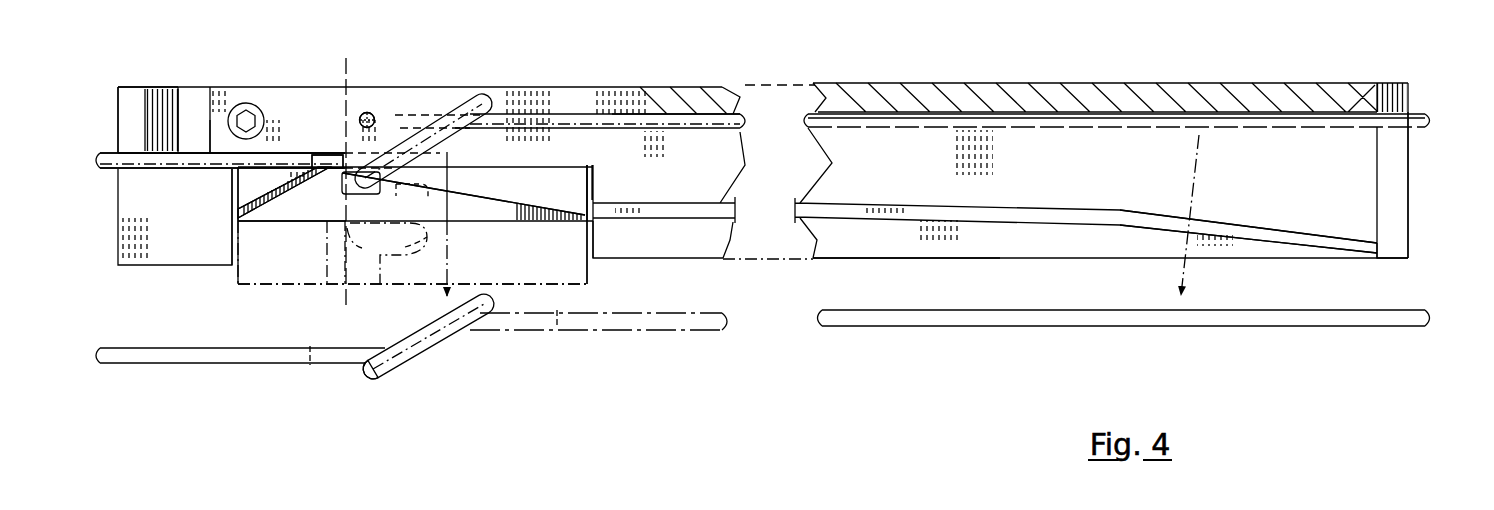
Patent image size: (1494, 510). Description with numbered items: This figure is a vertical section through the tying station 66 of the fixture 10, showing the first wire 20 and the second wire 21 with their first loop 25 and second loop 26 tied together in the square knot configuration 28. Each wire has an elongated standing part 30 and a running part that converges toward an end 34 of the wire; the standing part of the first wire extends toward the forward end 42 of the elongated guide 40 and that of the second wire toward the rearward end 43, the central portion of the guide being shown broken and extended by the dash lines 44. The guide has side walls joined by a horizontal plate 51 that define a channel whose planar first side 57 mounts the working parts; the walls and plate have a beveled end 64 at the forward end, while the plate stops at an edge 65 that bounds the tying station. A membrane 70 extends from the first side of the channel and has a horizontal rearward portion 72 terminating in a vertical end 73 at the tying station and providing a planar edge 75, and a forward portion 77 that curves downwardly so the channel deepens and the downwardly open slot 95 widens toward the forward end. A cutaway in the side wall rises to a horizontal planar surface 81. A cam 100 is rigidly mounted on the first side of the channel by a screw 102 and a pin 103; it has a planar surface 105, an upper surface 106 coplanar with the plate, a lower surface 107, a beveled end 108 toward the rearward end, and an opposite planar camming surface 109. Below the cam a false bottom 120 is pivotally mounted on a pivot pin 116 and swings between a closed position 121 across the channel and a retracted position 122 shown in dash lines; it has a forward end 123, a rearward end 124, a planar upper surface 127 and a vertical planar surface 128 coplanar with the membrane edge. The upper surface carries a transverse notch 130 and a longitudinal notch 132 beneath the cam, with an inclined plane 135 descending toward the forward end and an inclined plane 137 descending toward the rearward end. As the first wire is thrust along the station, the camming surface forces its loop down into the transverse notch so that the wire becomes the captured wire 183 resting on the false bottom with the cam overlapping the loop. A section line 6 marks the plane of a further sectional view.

The section line 6- 6 is at (340, 58).
The fixture 10 is at (1412, 188).
The first wire 20 is at (577, 330).
The second wire 21 is at (148, 169).
The first loop 25 is at (366, 382).
The second loop 26 is at (444, 340).
The square knot configuration 28 is at (413, 137).
The standing part 30 is at (707, 117).
The end of the wire 34 is at (548, 127).
The guide 40 is at (1411, 88).
The forward end 42 is at (1408, 236).
The rearward end 43 is at (120, 110).
The dash lines 44 is at (768, 86).
The horizontal plate 51 is at (1307, 83).
The first side of the channel 57 is at (886, 167).
The beveled end 64 is at (1396, 156).
The edge of the top plate 65 is at (640, 95).
The tying station 66 is at (476, 84).
The membrane 70 is at (1063, 226).
The rearward portion of the membrane 72 is at (673, 220).
The end of the membrane 73 is at (591, 218).
The edge of the membrane 75 is at (1040, 208).
The forward portion of the membrane 77 is at (1250, 224).
The horizontal planar surface 81 is at (515, 171).
The slot 95 is at (925, 258).
The cam 100 is at (222, 84).
The screw 102 is at (248, 103).
The pin 103 is at (371, 113).
The planar surface of the cam 105 is at (300, 111).
The upper surface of the cam 106 is at (365, 111).
The lower surface of the cam 107 is at (222, 152).
The beveled end of the cam 108 is at (190, 92).
The camming surface 109 is at (444, 99).
The pivot pin 116 is at (235, 182).
The false bottom 120 is at (303, 225).
The closed position 121 is at (272, 226).
The retracted position 122 is at (292, 285).
The forward end of the false bottom 123 is at (586, 219).
The rearward end of the false bottom 124 is at (238, 218).
The upper surface of the false bottom 127 is at (338, 165).
The vertical planar surface 128 is at (458, 221).
The transverse notch 130 is at (362, 194).
The longitudinal notch 132 is at (422, 215).
The inclined plane 135 is at (522, 196).
The inclined plane 137 is at (287, 193).
The captured wire 183 is at (345, 186).